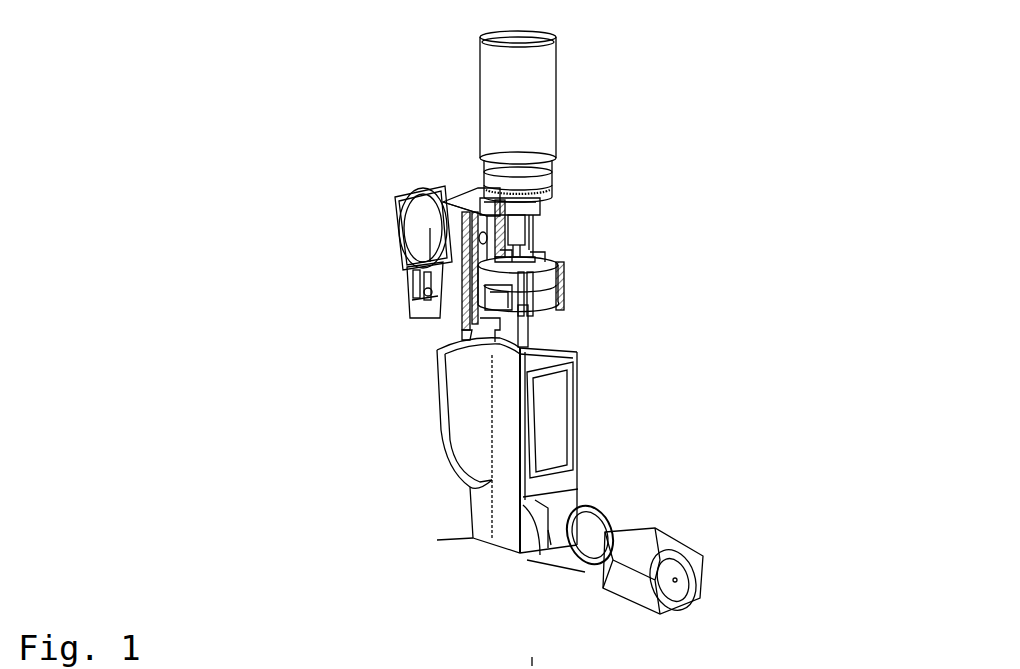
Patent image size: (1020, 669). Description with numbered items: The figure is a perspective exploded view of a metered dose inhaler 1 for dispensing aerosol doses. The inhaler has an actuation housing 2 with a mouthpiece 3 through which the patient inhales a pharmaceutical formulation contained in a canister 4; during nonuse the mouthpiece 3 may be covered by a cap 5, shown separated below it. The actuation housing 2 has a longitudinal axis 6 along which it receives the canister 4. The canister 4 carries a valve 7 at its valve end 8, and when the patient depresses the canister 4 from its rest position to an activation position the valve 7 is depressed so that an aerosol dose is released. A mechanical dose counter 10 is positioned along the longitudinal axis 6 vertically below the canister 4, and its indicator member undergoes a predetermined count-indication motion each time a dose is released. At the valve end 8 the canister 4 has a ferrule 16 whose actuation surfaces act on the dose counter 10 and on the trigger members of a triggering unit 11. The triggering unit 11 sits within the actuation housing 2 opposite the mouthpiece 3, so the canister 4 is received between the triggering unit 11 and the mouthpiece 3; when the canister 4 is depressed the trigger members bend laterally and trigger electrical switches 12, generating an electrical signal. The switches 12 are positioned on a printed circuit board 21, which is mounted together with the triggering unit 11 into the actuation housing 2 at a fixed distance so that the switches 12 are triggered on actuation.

The metered dose inhaler 1 is at (660, 86).
The actuation housing 2 is at (484, 518).
The mouthpiece 3 is at (576, 513).
The canister 4 is at (547, 103).
The cap 5 is at (660, 545).
The longitudinal axis 6 is at (523, 337).
The valve 7 is at (520, 215).
The valve end 8 is at (548, 239).
The mechanical dose counter 10 is at (543, 282).
The triggering unit 11 is at (462, 195).
The electrical switches 12 is at (428, 296).
The ferrule 16 is at (527, 200).
The printed circuit board 21 is at (395, 208).